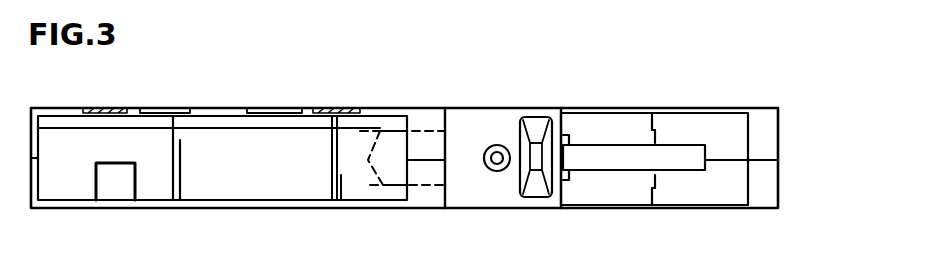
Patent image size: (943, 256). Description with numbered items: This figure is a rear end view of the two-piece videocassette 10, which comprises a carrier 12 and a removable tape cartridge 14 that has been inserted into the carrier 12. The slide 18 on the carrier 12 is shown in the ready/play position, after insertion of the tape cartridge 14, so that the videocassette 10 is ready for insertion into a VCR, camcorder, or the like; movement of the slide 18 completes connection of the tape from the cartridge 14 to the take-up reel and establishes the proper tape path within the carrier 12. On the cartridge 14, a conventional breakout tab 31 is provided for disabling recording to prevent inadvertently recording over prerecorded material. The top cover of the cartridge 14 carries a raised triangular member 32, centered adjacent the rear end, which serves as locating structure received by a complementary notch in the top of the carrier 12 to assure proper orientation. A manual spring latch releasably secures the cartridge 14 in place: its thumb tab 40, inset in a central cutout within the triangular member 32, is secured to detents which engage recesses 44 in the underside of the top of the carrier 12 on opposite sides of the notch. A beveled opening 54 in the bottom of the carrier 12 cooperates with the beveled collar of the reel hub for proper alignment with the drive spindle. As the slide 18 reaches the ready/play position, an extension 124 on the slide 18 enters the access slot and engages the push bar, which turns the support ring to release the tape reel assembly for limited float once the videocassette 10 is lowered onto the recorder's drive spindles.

The two-piece videocassette 10 is at (614, 80).
The carrier 12 is at (757, 108).
The tape cartridge 14 is at (78, 173).
The slide 18 is at (462, 112).
The breakout tab 31 is at (123, 183).
The triangular member 32 is at (305, 108).
The thumb tab 40 is at (160, 108).
The recesses 44 is at (103, 108).
The beveled opening 54 is at (305, 201).
The extension 124 is at (388, 185).